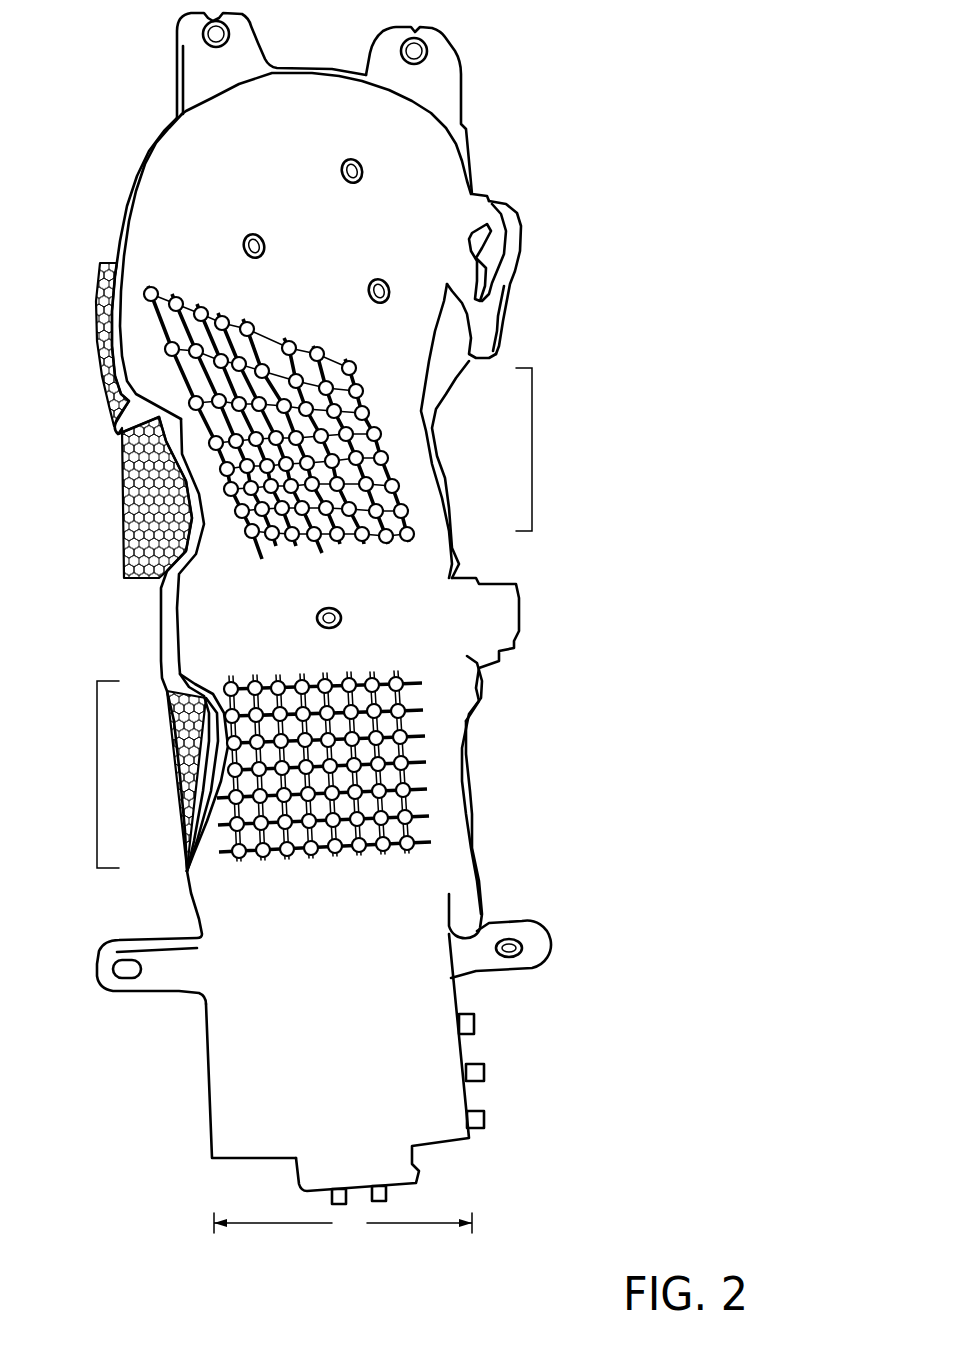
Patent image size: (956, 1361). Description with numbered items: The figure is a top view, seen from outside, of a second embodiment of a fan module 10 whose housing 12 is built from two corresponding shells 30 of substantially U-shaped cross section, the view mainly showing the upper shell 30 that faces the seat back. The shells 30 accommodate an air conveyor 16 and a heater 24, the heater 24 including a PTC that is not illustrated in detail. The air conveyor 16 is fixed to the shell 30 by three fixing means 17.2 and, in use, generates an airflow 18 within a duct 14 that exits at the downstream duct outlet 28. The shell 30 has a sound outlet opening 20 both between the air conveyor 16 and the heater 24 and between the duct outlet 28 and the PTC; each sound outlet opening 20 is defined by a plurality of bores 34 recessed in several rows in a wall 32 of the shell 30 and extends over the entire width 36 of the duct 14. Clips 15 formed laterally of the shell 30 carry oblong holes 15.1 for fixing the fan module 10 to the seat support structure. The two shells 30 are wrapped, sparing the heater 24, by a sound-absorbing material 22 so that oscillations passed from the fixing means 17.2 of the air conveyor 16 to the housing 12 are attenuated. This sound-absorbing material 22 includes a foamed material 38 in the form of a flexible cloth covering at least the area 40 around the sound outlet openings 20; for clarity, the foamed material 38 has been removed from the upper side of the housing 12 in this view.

The fan module 10 is at (505, 81).
The housing 12 is at (478, 121).
The duct 14 is at (145, 698).
The clips 15 is at (516, 903).
The oblong holes 15.1 is at (513, 953).
The air conveyor 16 is at (150, 110).
The fixing means 17.2 is at (370, 287).
The airflow 18 is at (538, 340).
The sound outlet opening 20 is at (460, 436).
The sound-absorbing material 22 is at (458, 480).
The heater 24 is at (500, 570).
The duct outlet 28 is at (444, 1153).
The shell 30 is at (185, 1053).
The wall 32 is at (338, 1046).
The bores 34 is at (398, 543).
The width 36 is at (343, 1224).
The foamed material 38 is at (115, 482).
The area 40 is at (320, 618).